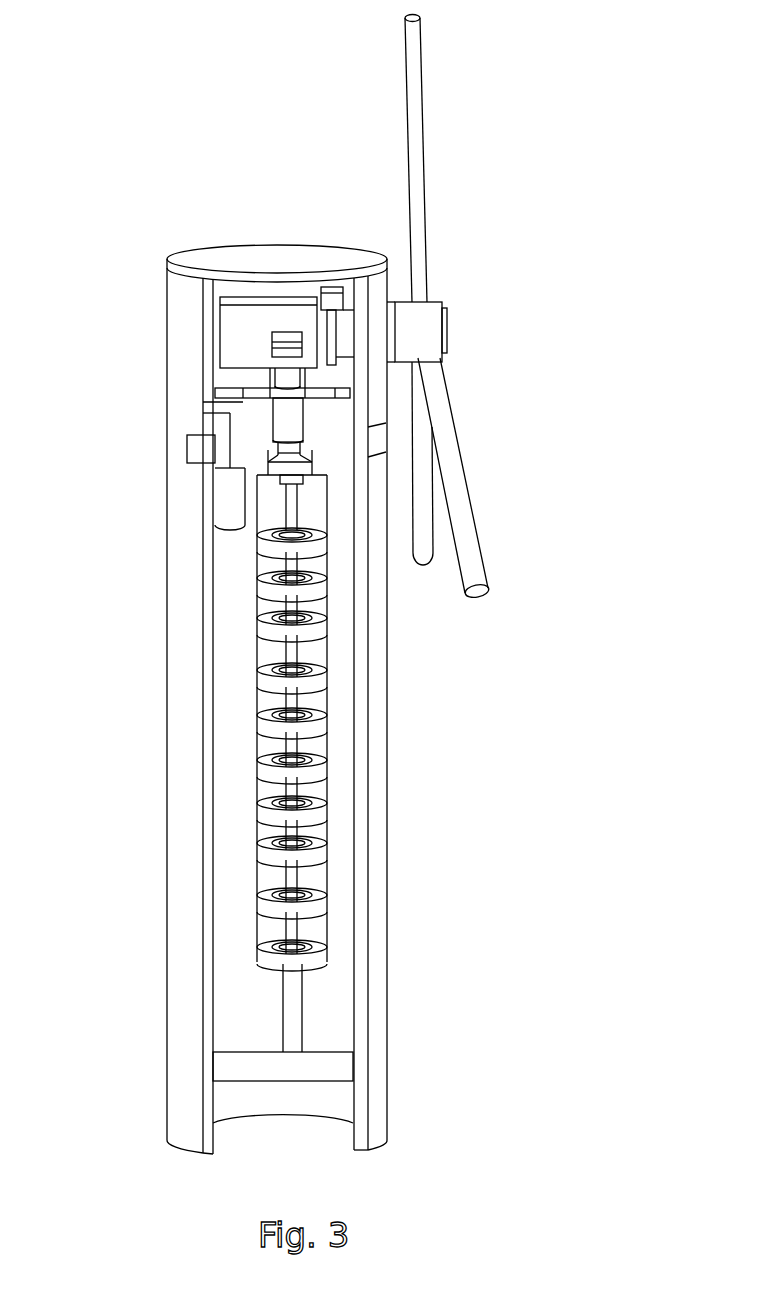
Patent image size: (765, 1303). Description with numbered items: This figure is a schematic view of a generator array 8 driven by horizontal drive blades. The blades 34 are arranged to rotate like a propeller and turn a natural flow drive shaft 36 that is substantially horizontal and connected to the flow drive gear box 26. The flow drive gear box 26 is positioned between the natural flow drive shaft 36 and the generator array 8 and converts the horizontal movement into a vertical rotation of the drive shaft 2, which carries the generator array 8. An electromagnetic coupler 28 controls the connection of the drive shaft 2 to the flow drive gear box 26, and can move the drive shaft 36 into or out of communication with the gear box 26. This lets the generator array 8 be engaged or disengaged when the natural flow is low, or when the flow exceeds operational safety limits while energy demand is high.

The drive shaft 2 is at (286, 449).
The generator array 8 is at (153, 473).
The flow drive gear box 26 is at (240, 345).
The electromagnetic coupler 28 is at (332, 300).
The blades 34 is at (408, 123).
The natural flow drive shaft 36 is at (347, 347).